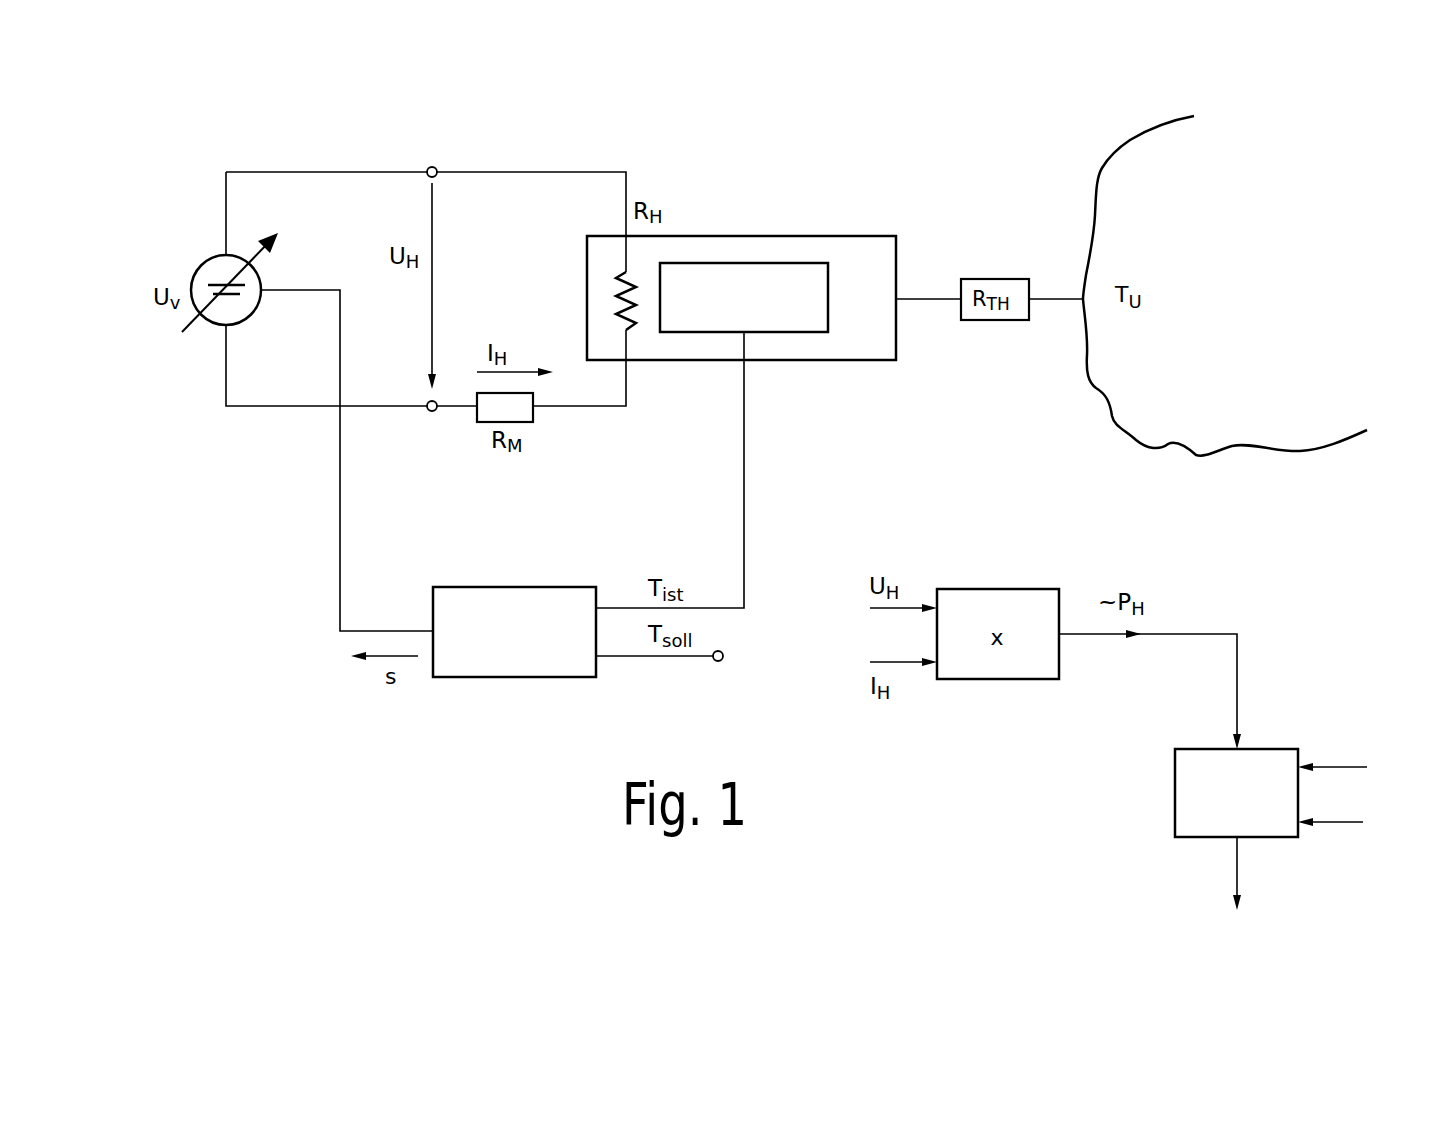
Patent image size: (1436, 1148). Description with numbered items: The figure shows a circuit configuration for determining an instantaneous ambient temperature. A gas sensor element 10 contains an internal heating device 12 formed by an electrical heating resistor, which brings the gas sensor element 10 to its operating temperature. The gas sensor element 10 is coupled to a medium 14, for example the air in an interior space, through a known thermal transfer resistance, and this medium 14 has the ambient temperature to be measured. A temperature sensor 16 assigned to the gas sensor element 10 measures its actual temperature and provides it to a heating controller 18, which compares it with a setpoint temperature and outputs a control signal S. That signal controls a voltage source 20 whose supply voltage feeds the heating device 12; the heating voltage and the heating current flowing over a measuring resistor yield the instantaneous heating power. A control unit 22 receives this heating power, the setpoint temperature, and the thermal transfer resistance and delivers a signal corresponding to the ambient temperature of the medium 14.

The gas sensor element 10 is at (822, 236).
The heating device 12 is at (610, 256).
The medium 14 is at (1197, 237).
The temperature sensor 16 is at (823, 316).
The heating controller 18 is at (455, 669).
The voltage source 20 is at (210, 255).
The control unit 22 is at (1188, 832).